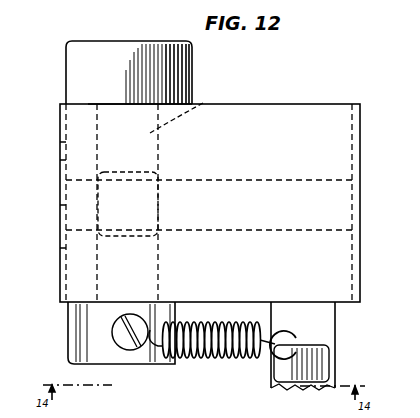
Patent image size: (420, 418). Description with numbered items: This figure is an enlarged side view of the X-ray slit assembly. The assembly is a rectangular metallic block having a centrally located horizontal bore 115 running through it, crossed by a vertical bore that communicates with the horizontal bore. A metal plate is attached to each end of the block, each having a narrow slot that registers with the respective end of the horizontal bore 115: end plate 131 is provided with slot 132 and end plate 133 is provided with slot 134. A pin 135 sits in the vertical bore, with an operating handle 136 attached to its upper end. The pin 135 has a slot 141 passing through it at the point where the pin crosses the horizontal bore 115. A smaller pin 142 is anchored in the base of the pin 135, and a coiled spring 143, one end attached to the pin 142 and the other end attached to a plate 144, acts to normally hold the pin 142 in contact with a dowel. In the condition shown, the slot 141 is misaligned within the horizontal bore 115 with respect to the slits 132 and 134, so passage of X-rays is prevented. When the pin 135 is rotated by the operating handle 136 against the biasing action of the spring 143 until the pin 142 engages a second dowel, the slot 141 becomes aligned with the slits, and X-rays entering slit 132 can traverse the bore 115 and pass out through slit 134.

The horizontal bore 115 is at (289, 190).
The end plate 131 is at (360, 135).
The slot 132 is at (360, 210).
The end plate 133 is at (60, 142).
The slot 134 is at (60, 205).
The pin 135 is at (203, 103).
The operating handle 136 is at (135, 45).
The slot 141 is at (157, 202).
The smaller pin 142 is at (130, 350).
The coiled spring 143 is at (203, 358).
The plate 144 is at (275, 343).